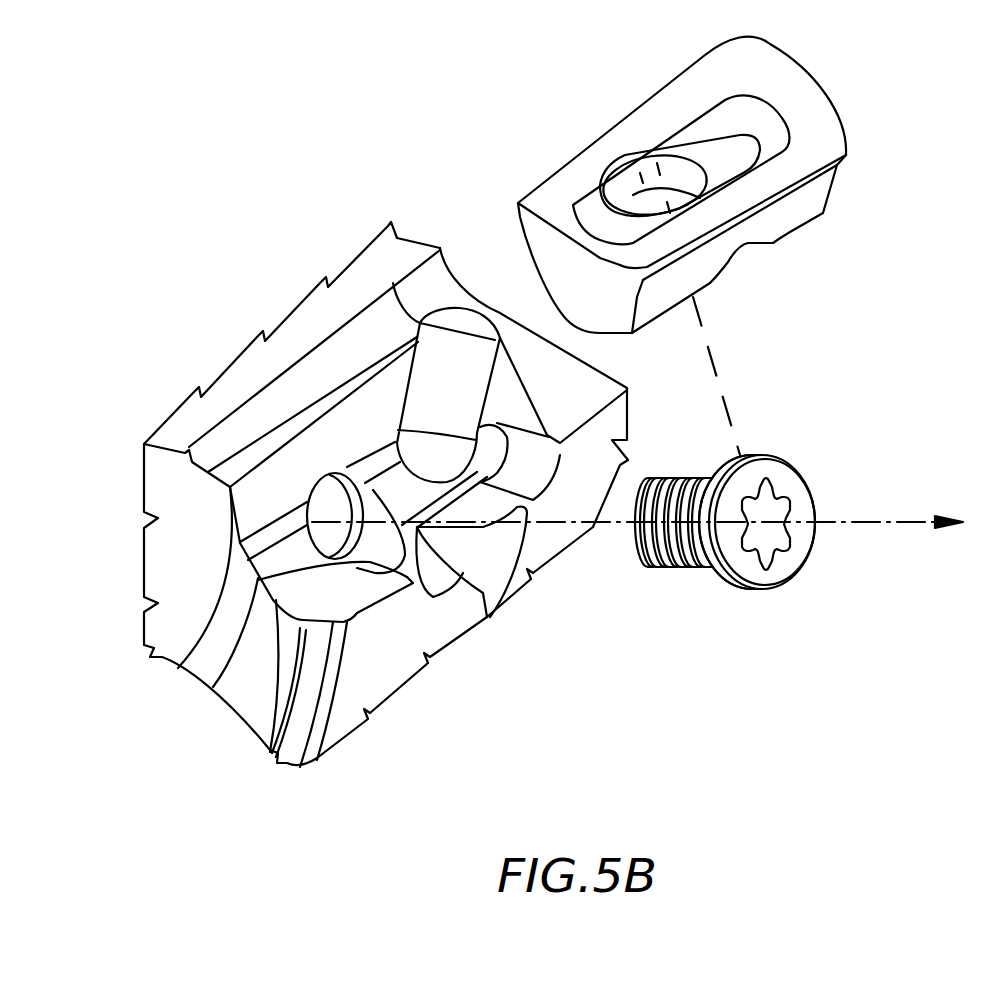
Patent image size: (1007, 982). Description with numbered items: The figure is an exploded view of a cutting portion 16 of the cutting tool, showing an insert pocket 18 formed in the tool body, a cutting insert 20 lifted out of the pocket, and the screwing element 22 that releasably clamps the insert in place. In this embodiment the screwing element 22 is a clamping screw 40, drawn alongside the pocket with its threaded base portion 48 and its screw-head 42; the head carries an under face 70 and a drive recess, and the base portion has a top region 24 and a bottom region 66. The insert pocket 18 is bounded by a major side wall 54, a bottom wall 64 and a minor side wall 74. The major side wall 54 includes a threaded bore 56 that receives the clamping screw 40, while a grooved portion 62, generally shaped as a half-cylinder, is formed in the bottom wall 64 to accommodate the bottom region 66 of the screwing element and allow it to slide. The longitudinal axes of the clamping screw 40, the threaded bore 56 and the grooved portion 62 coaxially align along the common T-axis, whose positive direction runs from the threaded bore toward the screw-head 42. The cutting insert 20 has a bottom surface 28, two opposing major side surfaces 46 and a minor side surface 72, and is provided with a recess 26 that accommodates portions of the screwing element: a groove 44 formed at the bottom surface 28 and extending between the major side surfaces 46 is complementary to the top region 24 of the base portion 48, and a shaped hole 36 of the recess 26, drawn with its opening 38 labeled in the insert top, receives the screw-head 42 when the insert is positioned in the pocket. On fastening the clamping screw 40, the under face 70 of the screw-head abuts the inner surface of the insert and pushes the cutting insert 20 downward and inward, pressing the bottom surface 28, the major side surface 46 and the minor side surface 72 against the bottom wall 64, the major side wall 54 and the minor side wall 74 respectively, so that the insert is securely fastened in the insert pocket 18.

The cutting portion 16 is at (365, 132).
The insert pocket 18 is at (185, 685).
The cutting insert 20 is at (833, 102).
The screwing element 22 is at (757, 529).
The top region 24 is at (668, 476).
The recess 26 is at (737, 260).
The bottom surface 28 is at (800, 228).
The shaped hole 36 is at (677, 177).
The through bore 38 is at (640, 180).
The clamping screw 40 is at (745, 455).
The screw-head 42 is at (750, 563).
The groove 44 is at (729, 263).
The major side surface 46 is at (813, 203).
The base portion 48 is at (692, 490).
The major side wall 54 is at (320, 437).
The threaded bore 56 is at (327, 510).
The grooved portion 62 is at (427, 550).
The bottom wall 64 is at (213, 695).
The bottom region 66 is at (668, 568).
The under face 70 is at (720, 570).
The minor side surface 72 is at (527, 238).
The minor side wall 74 is at (502, 378).